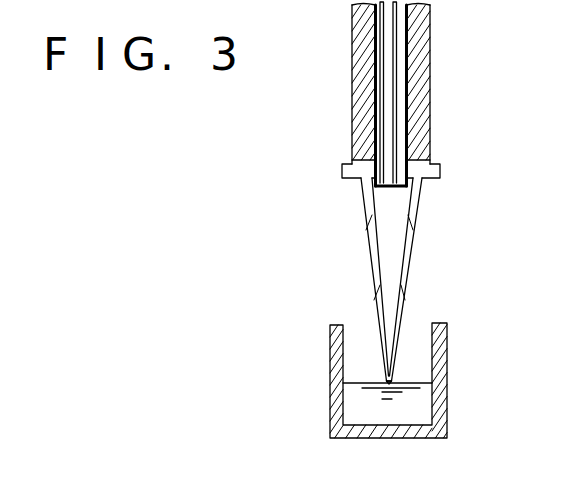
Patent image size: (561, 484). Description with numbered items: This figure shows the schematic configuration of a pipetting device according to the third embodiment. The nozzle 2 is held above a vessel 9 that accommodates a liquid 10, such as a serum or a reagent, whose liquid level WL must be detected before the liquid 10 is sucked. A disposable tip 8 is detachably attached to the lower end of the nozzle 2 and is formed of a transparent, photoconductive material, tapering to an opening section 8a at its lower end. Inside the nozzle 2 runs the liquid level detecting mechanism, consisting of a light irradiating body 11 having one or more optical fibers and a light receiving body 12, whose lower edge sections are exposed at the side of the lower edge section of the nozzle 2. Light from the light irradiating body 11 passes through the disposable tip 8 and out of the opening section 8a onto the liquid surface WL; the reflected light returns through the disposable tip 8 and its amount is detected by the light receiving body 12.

The nozzle 2 is at (423, 87).
The disposable tip 8 is at (440, 171).
The opening section 8a is at (387, 385).
The vessel 9 is at (447, 338).
The liquid 10 is at (420, 408).
The light irradiating body 11 is at (380, 34).
The light receiving body 12 is at (398, 34).
The liquid level WL is at (361, 383).